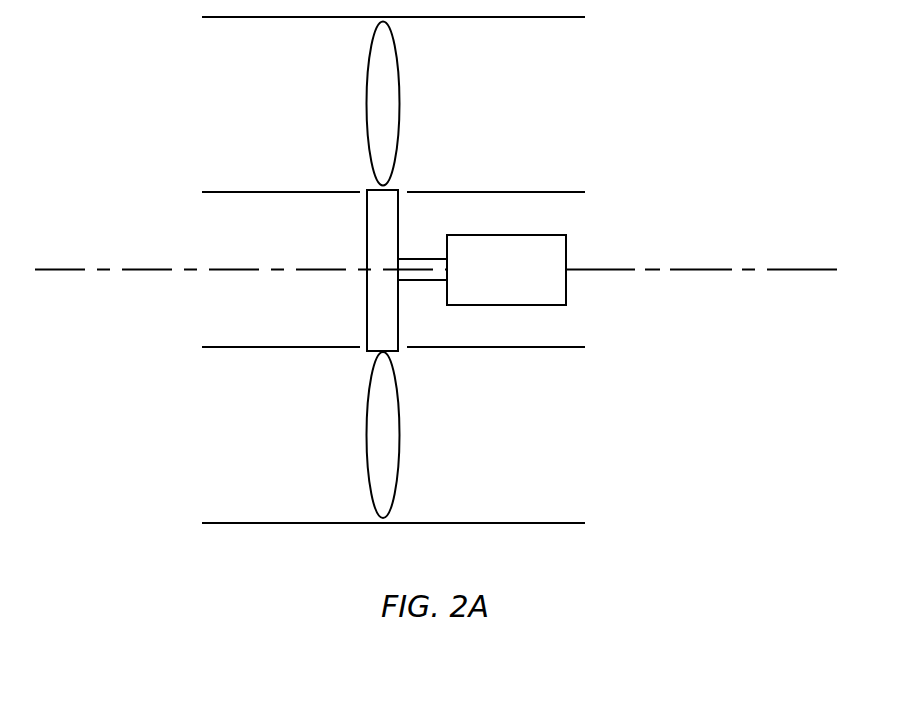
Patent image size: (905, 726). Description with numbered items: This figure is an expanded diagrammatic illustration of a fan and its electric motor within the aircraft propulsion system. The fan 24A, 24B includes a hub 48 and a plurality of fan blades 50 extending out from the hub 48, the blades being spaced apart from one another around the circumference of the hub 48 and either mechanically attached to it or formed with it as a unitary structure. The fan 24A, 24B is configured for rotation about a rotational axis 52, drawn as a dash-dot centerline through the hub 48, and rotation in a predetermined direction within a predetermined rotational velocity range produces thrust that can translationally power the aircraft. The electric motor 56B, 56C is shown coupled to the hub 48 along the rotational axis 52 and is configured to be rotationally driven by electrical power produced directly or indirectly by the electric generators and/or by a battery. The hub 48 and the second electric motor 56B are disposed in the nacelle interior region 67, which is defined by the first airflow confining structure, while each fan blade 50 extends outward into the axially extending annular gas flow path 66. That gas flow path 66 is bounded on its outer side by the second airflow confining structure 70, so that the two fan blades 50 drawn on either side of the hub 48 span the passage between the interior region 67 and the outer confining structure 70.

The fan 24A is at (308, 270).
The fan 24B is at (210, 230).
The hub 48 is at (367, 298).
The fan blades 50 is at (399, 80).
The rotational axis 52 is at (830, 272).
The second electric motor 56B is at (562, 263).
The electric motor 56C is at (567, 249).
The annular gas flow path 66 is at (302, 115).
The nacelle interior region 67 is at (605, 333).
The second airflow confining structure 70 is at (562, 522).